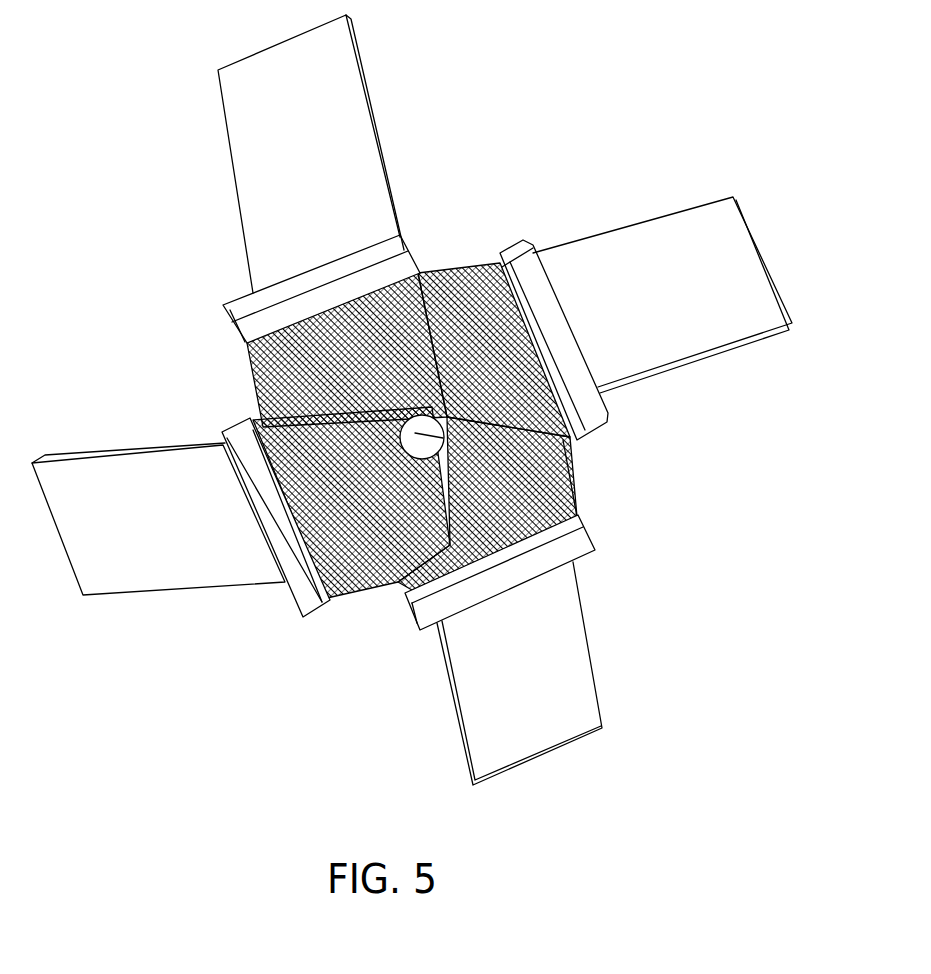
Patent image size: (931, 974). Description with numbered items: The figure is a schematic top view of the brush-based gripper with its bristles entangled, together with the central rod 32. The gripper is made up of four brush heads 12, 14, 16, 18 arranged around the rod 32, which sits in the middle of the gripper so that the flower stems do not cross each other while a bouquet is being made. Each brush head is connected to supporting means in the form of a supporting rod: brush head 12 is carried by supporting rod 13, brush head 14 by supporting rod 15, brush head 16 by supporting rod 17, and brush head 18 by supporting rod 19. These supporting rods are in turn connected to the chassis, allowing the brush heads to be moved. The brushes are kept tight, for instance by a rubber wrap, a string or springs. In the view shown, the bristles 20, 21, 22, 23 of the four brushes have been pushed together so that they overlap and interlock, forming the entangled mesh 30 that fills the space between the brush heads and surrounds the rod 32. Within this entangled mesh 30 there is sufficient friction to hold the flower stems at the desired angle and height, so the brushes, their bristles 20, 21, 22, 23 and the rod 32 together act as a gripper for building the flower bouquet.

The brush head 12 is at (530, 270).
The supporting rod 13 is at (720, 240).
The brush head 14 is at (565, 548).
The supporting rod 15 is at (563, 667).
The brush head 16 is at (303, 587).
The supporting rod 17 is at (117, 552).
The brush head 18 is at (245, 302).
The supporting rod 19 is at (290, 113).
The bristles 20 is at (363, 593).
The bristles 21 is at (250, 365).
The bristles 22 is at (570, 493).
The bristles 23 is at (483, 267).
The entangled mesh 30 is at (258, 403).
The rod 32 is at (558, 463).